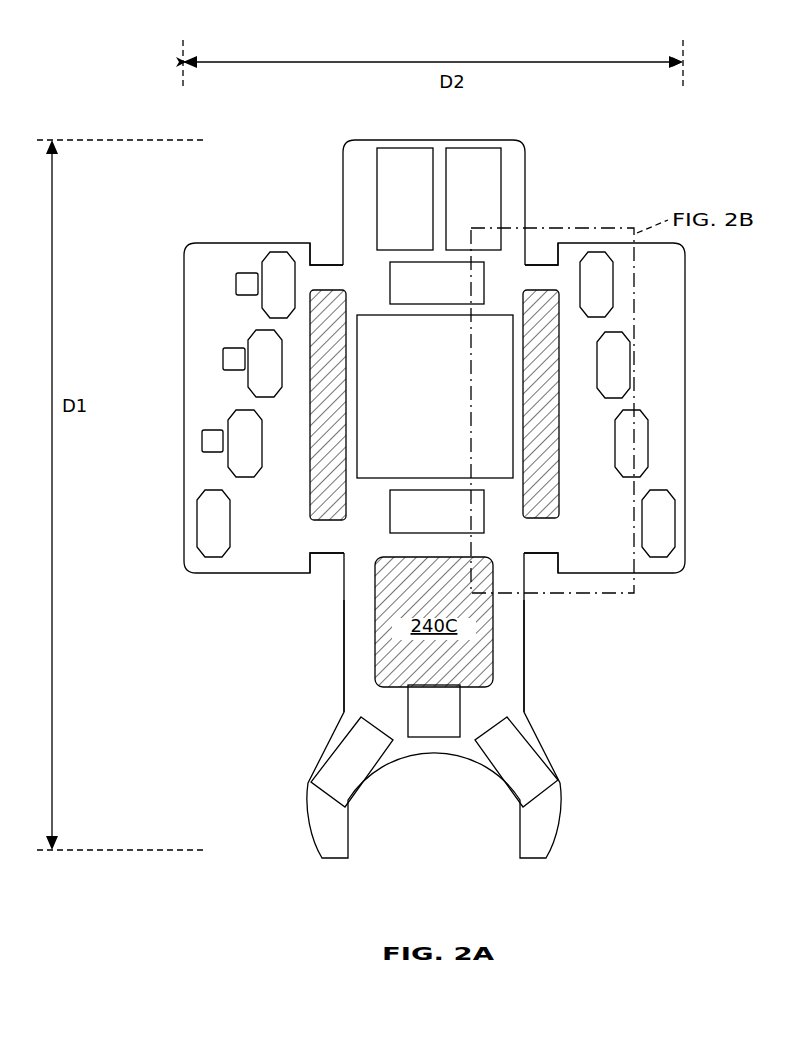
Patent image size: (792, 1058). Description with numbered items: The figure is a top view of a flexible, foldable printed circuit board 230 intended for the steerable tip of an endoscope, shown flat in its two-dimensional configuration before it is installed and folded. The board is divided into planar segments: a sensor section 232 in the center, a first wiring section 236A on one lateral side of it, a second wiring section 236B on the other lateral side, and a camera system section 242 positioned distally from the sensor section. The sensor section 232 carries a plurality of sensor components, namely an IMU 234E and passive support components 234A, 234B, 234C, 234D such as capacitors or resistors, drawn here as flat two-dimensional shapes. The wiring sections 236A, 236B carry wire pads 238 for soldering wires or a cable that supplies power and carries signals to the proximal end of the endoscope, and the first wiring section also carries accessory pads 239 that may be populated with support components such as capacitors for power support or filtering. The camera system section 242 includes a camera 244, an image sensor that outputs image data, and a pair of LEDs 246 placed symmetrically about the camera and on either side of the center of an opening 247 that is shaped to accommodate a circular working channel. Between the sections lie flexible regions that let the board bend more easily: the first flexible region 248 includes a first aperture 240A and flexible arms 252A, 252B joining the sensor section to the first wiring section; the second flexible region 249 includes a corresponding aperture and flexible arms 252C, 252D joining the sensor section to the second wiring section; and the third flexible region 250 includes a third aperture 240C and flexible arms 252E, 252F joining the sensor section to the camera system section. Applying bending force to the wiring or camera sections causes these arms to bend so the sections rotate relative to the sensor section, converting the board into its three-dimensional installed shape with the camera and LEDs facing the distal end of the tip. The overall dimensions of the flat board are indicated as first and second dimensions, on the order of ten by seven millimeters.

The flexible printed circuit board 230 is at (698, 803).
The sensor section 232 is at (369, 143).
The passive support component 234A is at (405, 199).
The passive support component 234B is at (473, 199).
The passive support component 234C is at (437, 283).
The passive support component 234D is at (437, 511).
The IMU 234E is at (435, 396).
The first wiring section 236A is at (193, 296).
The second wiring section 236B is at (677, 296).
The wire pads 238 is at (205, 548).
The accessory pads 239 is at (233, 290).
The first aperture 240A is at (317, 487).
The third aperture 240C is at (434, 622).
The camera system section 242 is at (553, 812).
The camera 244 is at (440, 727).
The LEDs 246 is at (343, 797).
The opening 247 is at (401, 843).
The first flexible region 248 is at (325, 186).
The second flexible region 249 is at (540, 186).
The third flexible region 250 is at (314, 640).
The flexible arm 252A is at (327, 272).
The flexible arm 252B is at (327, 548).
The flexible arm 252C is at (542, 270).
The flexible arm 252D is at (537, 545).
The flexible arm 252E is at (347, 667).
The flexible arm 252F is at (520, 667).